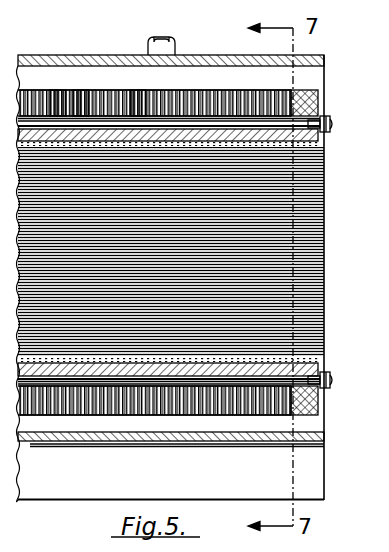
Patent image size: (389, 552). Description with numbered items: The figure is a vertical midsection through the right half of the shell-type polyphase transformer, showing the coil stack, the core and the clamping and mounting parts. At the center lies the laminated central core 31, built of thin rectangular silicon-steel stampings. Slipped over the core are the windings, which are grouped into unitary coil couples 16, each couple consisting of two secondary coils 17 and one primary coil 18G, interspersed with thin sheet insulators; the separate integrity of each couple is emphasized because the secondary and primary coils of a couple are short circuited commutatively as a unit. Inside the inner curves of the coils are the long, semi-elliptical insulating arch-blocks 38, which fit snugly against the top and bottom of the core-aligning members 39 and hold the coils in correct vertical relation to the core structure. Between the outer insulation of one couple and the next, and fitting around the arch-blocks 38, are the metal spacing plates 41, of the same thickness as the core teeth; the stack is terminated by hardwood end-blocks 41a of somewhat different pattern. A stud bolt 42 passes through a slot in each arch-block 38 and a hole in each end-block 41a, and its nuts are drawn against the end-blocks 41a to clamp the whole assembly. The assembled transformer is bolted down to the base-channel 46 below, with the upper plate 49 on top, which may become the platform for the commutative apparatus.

The upper plate 49 is at (46, 47).
The secondary coil 17 is at (51, 82).
The primary coil 18G is at (72, 82).
The unitary coil couple 16 is at (128, 82).
The metal spacing plate 41 is at (196, 82).
The end-block 41a is at (300, 82).
The stud bolt 42 is at (325, 116).
The core-aligning member 39 is at (318, 131).
The insulating arch-block 38 is at (276, 137).
The central core 31 is at (300, 206).
The base-channel 46 is at (319, 429).